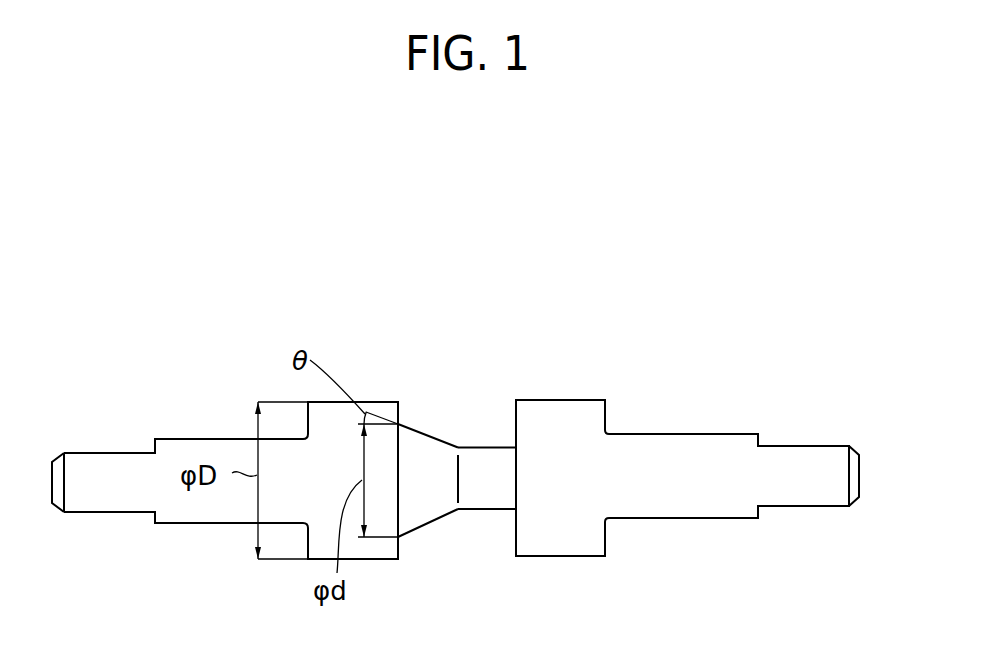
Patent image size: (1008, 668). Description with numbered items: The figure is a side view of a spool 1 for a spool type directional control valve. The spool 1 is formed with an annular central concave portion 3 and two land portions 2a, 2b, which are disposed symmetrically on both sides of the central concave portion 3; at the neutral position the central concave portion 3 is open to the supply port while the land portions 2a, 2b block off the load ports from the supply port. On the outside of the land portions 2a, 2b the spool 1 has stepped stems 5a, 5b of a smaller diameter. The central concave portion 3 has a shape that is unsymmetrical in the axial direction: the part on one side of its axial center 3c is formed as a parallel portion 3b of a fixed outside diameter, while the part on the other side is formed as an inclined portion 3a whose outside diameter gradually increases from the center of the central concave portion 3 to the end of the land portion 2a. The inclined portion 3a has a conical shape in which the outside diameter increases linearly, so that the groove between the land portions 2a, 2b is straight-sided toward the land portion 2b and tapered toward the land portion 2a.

The spool 1 is at (782, 382).
The land portion 2a is at (355, 401).
The land portion 2b is at (573, 400).
The central concave portion 3 is at (451, 468).
The inclined portion 3a is at (415, 431).
The parallel portion 3b is at (498, 447).
The center 3c is at (460, 447).
The stepped stem 5a is at (200, 515).
The stepped stem 5b is at (670, 507).